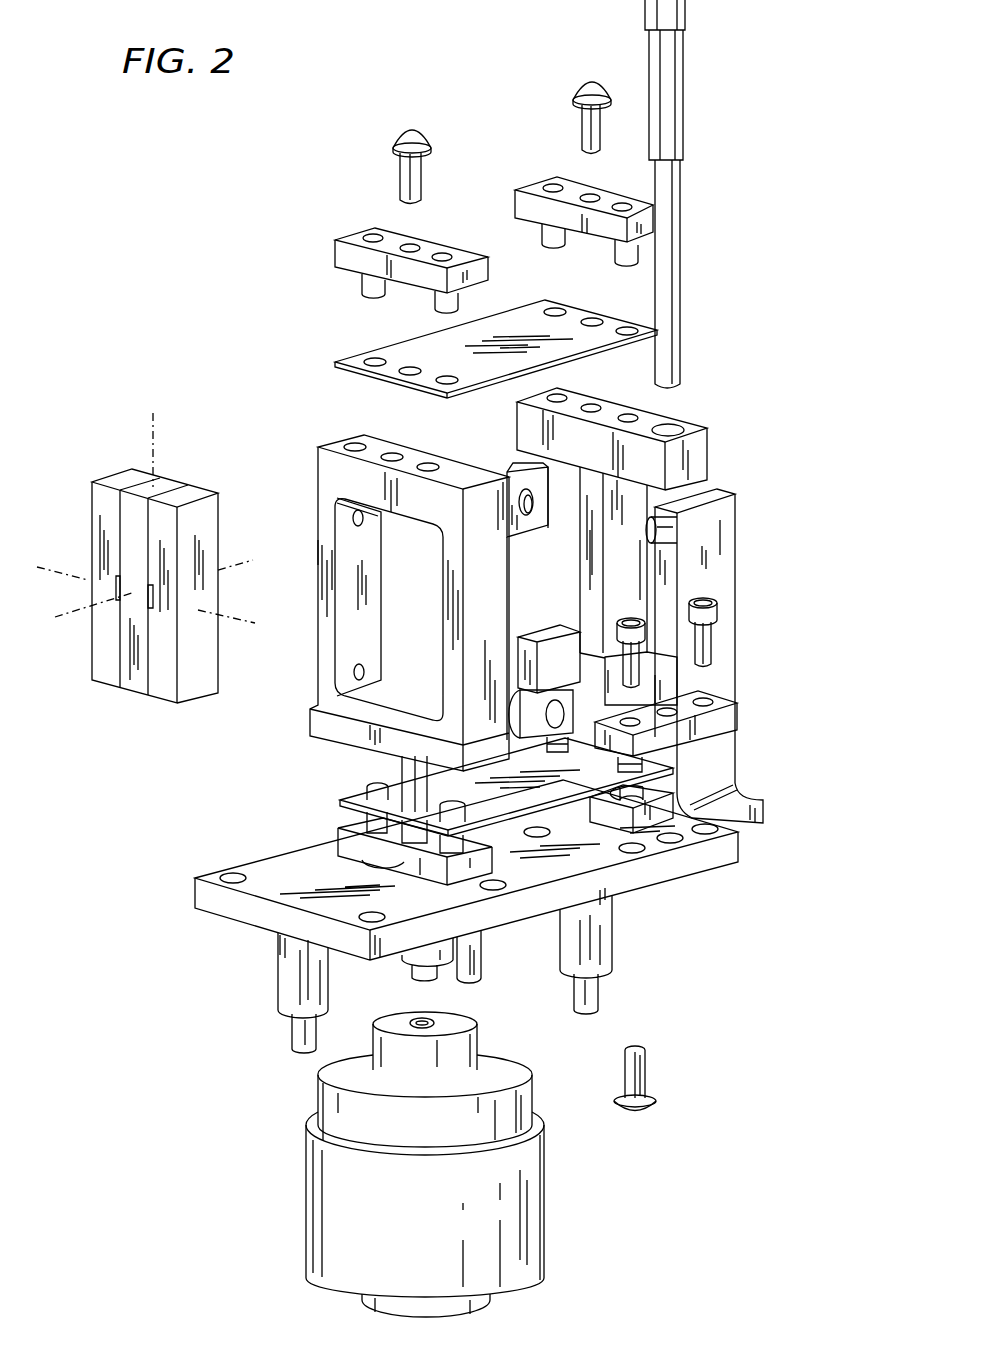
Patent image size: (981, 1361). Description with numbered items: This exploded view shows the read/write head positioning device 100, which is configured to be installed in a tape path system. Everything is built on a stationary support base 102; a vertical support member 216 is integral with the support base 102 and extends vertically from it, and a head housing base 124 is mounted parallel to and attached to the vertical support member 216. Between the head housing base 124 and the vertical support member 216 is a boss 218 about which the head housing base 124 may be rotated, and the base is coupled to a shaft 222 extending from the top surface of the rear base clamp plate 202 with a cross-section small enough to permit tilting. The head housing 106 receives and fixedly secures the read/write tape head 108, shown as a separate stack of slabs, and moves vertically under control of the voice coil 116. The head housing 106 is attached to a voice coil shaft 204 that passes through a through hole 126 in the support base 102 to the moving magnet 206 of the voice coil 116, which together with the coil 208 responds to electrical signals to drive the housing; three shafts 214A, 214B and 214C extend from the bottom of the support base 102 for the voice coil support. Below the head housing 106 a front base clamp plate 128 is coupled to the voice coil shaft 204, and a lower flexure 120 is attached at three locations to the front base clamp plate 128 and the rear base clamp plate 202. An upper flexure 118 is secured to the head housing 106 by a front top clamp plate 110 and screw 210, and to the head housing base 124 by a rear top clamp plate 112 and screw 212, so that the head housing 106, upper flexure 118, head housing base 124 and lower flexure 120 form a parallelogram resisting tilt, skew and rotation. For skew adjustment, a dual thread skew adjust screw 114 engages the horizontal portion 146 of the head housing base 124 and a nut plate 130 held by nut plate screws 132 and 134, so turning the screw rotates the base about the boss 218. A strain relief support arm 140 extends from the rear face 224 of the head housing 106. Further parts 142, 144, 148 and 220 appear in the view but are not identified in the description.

The head positioning device 100 is at (163, 225).
The support base 102 is at (740, 843).
The head housing 106 is at (318, 470).
The read/write tape head 108 is at (118, 473).
The front top clamp plate 110 is at (335, 240).
The rear top clamp plate 112 is at (540, 183).
The skew adjust screw 114 is at (683, 104).
The voice coil 116 is at (575, 1201).
The upper flexure 118 is at (407, 347).
The lower flexure 120 is at (570, 800).
The head housing base 124 is at (733, 451).
The through hole 126 is at (362, 873).
The front base clamp plate 128 is at (356, 822).
The nut plate 130 is at (739, 714).
The nut plate screw 132 is at (628, 622).
The nut plate screw 134 is at (719, 610).
The strain relief support arm 140 is at (543, 687).
The bracket plate 142 is at (513, 463).
The vertical plate 144 is at (580, 590).
The horizontal portion 146 is at (667, 416).
The slot 148 is at (318, 552).
The rear base clamp plate 202 is at (658, 815).
The voice coil shaft 204 is at (410, 968).
The voice coil magnet 206 is at (318, 1090).
The coil 208 is at (307, 1197).
The screw 210 is at (397, 182).
The screw 212 is at (578, 126).
The shaft 214A is at (292, 1034).
The shaft 214B is at (483, 960).
The shaft 214C is at (612, 972).
The vertical support member 216 is at (737, 585).
The boss 218 is at (685, 522).
The screw 220 is at (646, 1072).
The shaft 222 is at (678, 778).
The rear face 224 is at (388, 422).